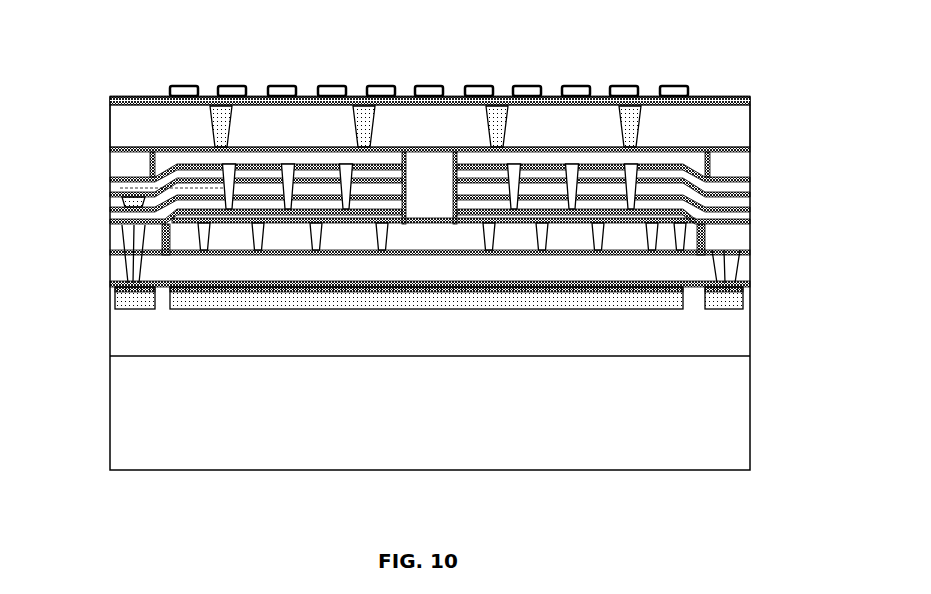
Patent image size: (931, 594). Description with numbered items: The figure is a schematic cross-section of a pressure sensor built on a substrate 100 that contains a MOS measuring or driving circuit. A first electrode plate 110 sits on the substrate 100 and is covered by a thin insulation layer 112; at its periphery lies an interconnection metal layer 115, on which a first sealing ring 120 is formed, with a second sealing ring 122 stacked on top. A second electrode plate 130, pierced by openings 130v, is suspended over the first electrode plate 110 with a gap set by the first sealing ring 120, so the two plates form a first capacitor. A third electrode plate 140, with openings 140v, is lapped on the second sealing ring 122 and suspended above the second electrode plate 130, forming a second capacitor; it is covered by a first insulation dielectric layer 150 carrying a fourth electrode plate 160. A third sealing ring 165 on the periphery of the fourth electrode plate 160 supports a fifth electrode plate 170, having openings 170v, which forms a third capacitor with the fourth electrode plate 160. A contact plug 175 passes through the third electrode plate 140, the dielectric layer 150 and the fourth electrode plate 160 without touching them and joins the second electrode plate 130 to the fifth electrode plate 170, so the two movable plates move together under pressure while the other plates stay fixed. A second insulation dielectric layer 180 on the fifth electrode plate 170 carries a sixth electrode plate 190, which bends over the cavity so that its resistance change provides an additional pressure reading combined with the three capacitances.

The substrate 100 is at (752, 332).
The first electrode plate 110 is at (685, 300).
The insulation layer 112 is at (700, 268).
The interconnection metal layer 115 is at (112, 297).
The first sealing ring 120 is at (108, 262).
The second sealing ring 122 is at (108, 232).
The second electrode plate 130 is at (703, 230).
The openings 130v is at (598, 232).
The third electrode plate 140 is at (750, 212).
The openings 140v is at (118, 192).
The first insulation dielectric layer 150 is at (750, 193).
The fourth electrode plate 160 is at (750, 177).
The third sealing ring 165 is at (750, 158).
The fifth electrode plate 170 is at (750, 128).
The openings 170v is at (636, 132).
The contact plug 175 is at (430, 165).
The second insulation dielectric layer 180 is at (750, 95).
The sixth electrode plate 190 is at (672, 87).